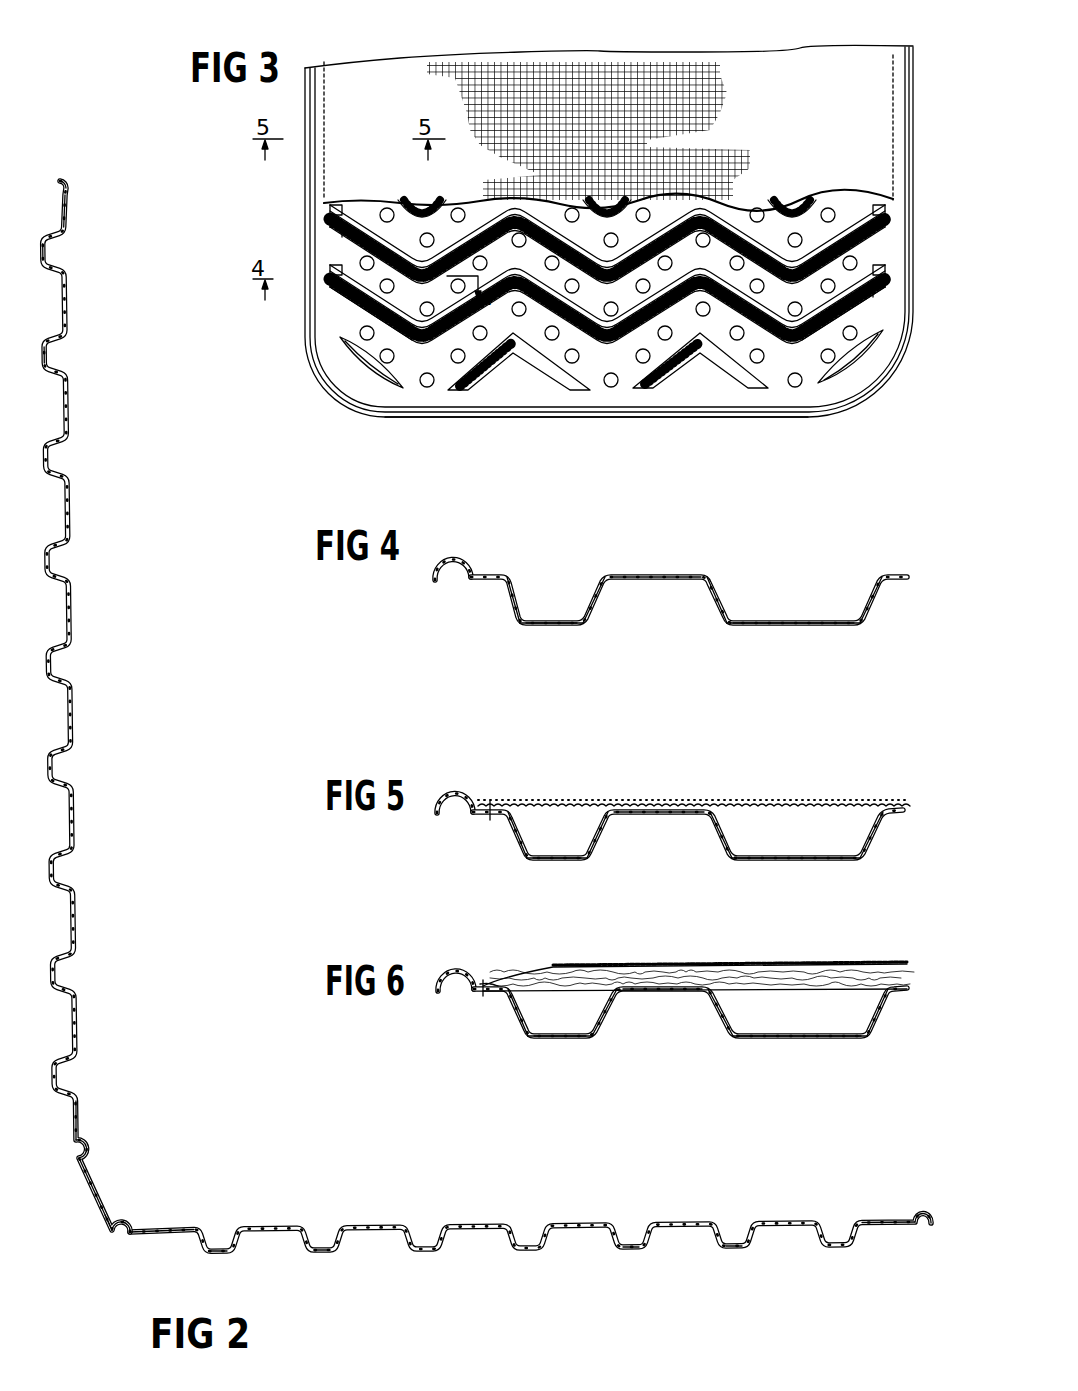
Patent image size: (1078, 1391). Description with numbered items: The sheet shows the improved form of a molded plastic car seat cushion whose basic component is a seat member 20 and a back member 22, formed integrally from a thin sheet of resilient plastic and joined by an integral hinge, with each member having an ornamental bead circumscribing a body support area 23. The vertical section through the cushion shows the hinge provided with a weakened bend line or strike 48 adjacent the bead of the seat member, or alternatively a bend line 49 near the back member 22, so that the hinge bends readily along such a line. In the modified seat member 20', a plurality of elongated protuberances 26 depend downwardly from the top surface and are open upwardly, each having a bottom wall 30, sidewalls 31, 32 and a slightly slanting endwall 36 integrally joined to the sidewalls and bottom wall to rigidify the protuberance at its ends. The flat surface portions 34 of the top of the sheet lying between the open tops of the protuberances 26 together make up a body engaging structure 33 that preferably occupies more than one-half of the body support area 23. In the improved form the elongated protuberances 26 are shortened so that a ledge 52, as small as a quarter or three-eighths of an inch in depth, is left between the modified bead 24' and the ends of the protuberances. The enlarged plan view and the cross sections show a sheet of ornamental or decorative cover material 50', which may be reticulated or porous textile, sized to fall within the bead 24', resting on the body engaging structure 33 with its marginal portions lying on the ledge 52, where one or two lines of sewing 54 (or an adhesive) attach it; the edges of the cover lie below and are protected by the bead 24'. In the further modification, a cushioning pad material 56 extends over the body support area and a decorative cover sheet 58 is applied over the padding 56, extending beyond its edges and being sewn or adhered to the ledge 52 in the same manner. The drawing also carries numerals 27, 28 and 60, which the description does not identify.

In FIG. 2, the seat member 20 is at (530, 1209).
In FIG. 3, the seat member 20' is at (572, 232).
In FIG. 2, the back member 22 is at (80, 621).
In FIG. 3, the body support area 23 is at (877, 233).
In FIG. 3, the bead 24' is at (590, 76).
In FIG. 4, the bead 24' is at (461, 550).
In FIG. 5, the bead 24' is at (464, 782).
In FIG. 6, the bead 24' is at (465, 960).
In FIG. 2, the bead 24' is at (508, 701).
In FIG. 3, the elongated protuberances 26 is at (340, 222).
In FIG. 4, the elongated protuberances 26 is at (562, 610).
In FIG. 5, the elongated protuberances 26 is at (578, 845).
In FIG. 6, the elongated protuberances 26 is at (580, 1017).
In FIG. 2, the elongated protuberances 26 is at (58, 545).
In FIG. 3, the zigzag rib 27 is at (500, 200).
In FIG. 3, the rib end 28 is at (440, 213).
In FIG. 4, the bottom wall 30 is at (550, 628).
In FIG. 5, the bottom wall 30 is at (552, 862).
In FIG. 6, the bottom wall 30 is at (562, 1040).
In FIG. 3, the sidewall 31 is at (388, 338).
In FIG. 3, the sidewall 32 is at (338, 268).
In FIG. 4, the sidewall 32 is at (598, 602).
In FIG. 5, the sidewall 32 is at (600, 830).
In FIG. 6, the sidewall 32 is at (608, 1013).
In FIG. 3, the body engaging structure 33 is at (703, 382).
In FIG. 4, the surface portions 34 is at (652, 573).
In FIG. 5, the surface portions 34 is at (663, 808).
In FIG. 6, the surface portions 34 is at (663, 993).
In FIG. 3, the endwall 36 is at (332, 281).
In FIG. 4, the endwall 36 is at (512, 606).
In FIG. 5, the endwall 36 is at (515, 838).
In FIG. 6, the endwall 36 is at (518, 1025).
In FIG. 2, the weakened bend line 48 is at (110, 1236).
In FIG. 2, the bend line 49 is at (75, 1160).
In FIG. 3, the sheet of decorative cover material 50' is at (608, 113).
In FIG. 5, the sheet of decorative cover material 50' is at (694, 778).
In FIG. 3, the ledge 52 is at (453, 406).
In FIG. 4, the ledge 52 is at (480, 583).
In FIG. 5, the ledge 52 is at (482, 818).
In FIG. 6, the ledge 52 is at (484, 1000).
In FIG. 2, the ledge 52 is at (68, 212).
In FIG. 5, the lines of sewing 54 is at (492, 802).
In FIG. 6, the cushioning pad material 56 is at (812, 978).
In FIG. 6, the decorative cover sheet 58 is at (756, 967).
In FIG. 6, the edge clip 60 is at (488, 983).